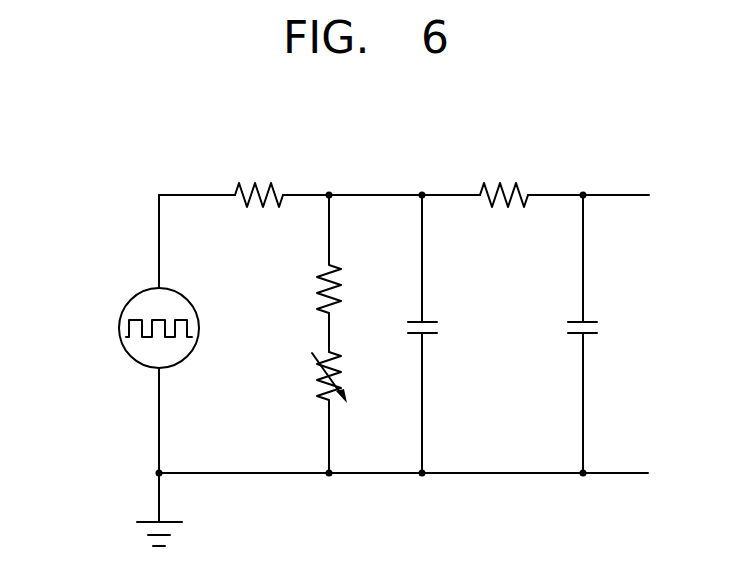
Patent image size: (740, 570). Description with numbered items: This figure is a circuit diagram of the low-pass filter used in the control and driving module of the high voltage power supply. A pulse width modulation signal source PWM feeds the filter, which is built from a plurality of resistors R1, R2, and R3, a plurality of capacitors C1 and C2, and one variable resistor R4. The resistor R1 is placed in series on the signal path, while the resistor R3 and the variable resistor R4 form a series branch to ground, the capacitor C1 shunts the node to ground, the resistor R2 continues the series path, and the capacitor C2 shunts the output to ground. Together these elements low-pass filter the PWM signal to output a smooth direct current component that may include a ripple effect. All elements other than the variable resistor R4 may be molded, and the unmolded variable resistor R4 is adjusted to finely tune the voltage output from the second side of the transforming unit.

The pulse width modulation signal PWM is at (119, 328).
The resistor R1 is at (259, 179).
The resistor R2 is at (504, 179).
The resistor R3 is at (343, 273).
The variable resistor R4 is at (341, 412).
The capacitor C1 is at (439, 334).
The capacitor C2 is at (599, 334).